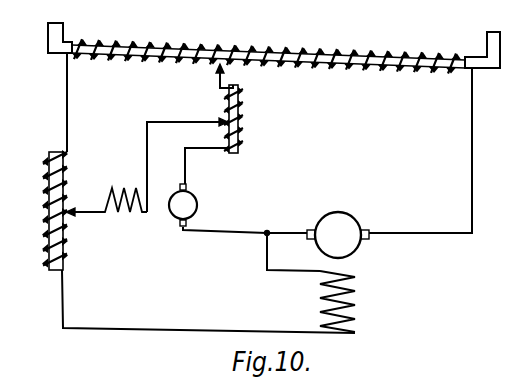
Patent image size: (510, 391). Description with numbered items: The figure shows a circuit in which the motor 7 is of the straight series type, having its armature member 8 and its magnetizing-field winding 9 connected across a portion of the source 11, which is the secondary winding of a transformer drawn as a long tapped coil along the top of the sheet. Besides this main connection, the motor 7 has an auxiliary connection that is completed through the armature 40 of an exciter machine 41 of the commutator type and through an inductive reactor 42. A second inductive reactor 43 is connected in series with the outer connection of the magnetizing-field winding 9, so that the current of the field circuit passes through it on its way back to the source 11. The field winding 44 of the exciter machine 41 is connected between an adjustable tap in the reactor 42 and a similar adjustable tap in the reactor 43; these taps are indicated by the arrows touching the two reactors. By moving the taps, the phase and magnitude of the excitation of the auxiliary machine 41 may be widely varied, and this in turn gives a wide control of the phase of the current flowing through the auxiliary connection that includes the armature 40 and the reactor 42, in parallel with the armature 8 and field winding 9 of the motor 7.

The secondary winding 11 is at (297, 43).
The inductive reactor 42 is at (240, 119).
The field winding 44 is at (108, 187).
The armature 40 is at (197, 204).
The exciter machine 41 is at (162, 250).
The inductive reactor 43 is at (64, 226).
The armature 8 is at (339, 220).
The motor 7 is at (386, 277).
The magnetizing-field winding 9 is at (350, 316).